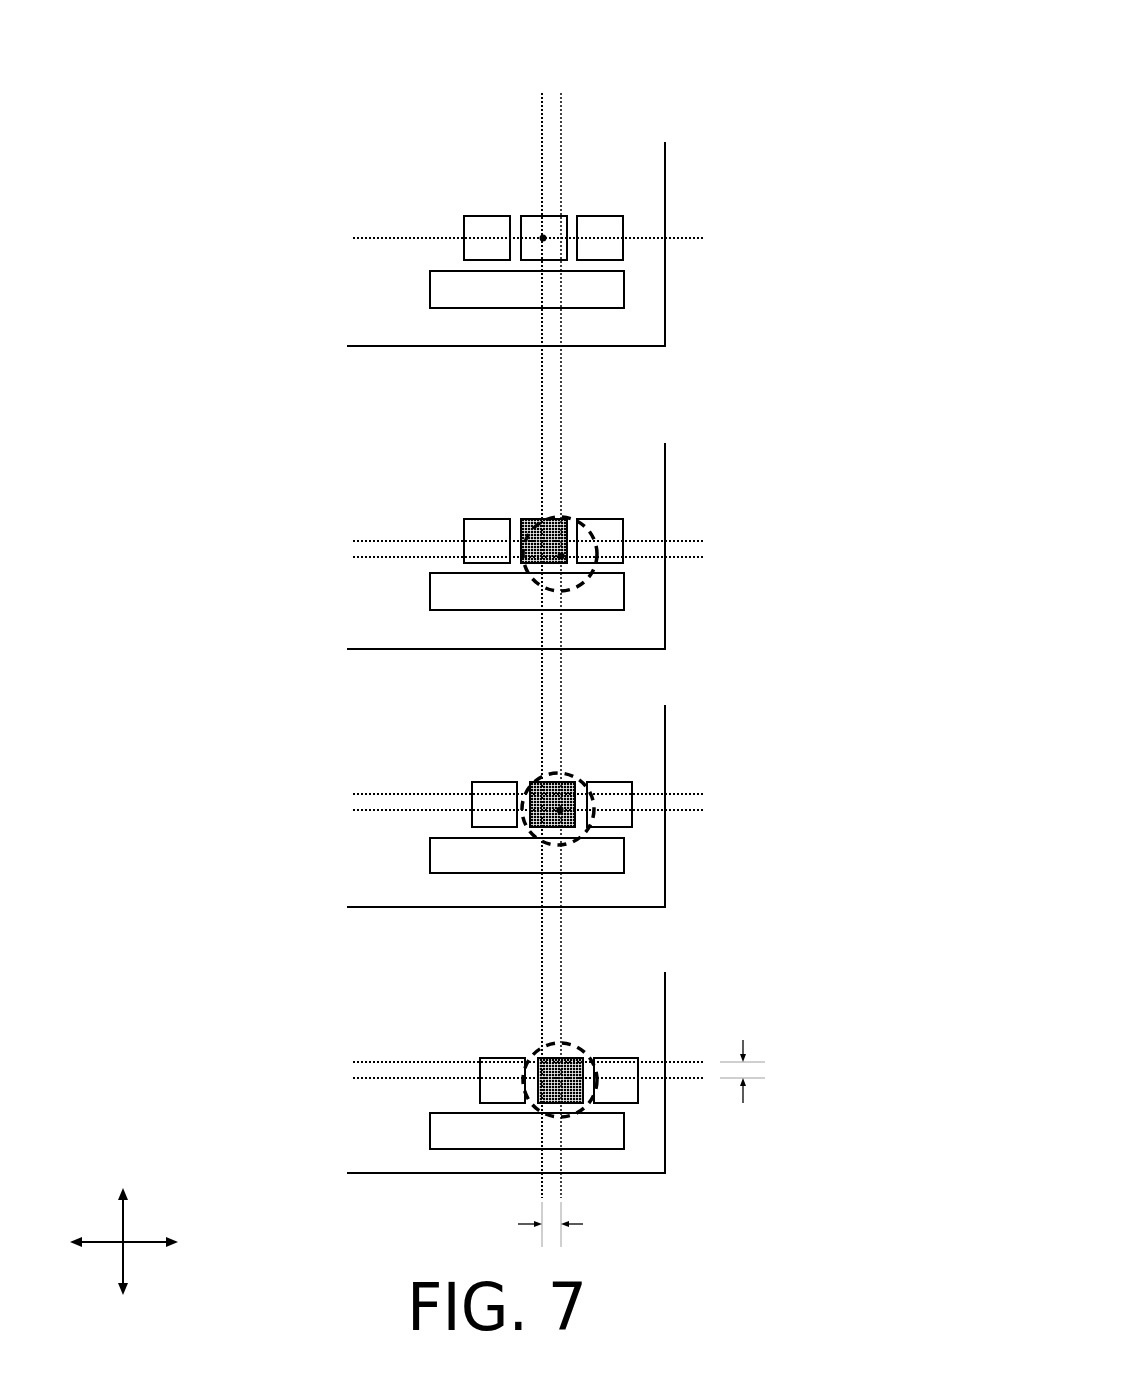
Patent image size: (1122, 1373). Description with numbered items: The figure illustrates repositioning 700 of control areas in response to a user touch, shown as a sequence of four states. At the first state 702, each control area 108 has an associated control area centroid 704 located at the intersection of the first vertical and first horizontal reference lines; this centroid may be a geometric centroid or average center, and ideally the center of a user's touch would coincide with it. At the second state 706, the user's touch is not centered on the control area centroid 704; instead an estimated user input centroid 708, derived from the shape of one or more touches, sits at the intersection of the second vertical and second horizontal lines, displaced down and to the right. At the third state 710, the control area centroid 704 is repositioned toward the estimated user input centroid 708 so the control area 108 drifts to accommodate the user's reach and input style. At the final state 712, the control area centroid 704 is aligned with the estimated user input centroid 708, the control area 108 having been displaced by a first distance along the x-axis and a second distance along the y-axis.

The repositioning of control areas 700 is at (777, 80).
The control area with centroid 702 is at (415, 244).
The control area centroid 704 is at (550, 232).
The control area 108 is at (557, 252).
The control area in initial position 706 is at (396, 546).
The estimated user input centroid 708 is at (585, 527).
The control area in transit 710 is at (395, 806).
The control area centroid aligned with estimated user input centroid 712 is at (396, 1072).